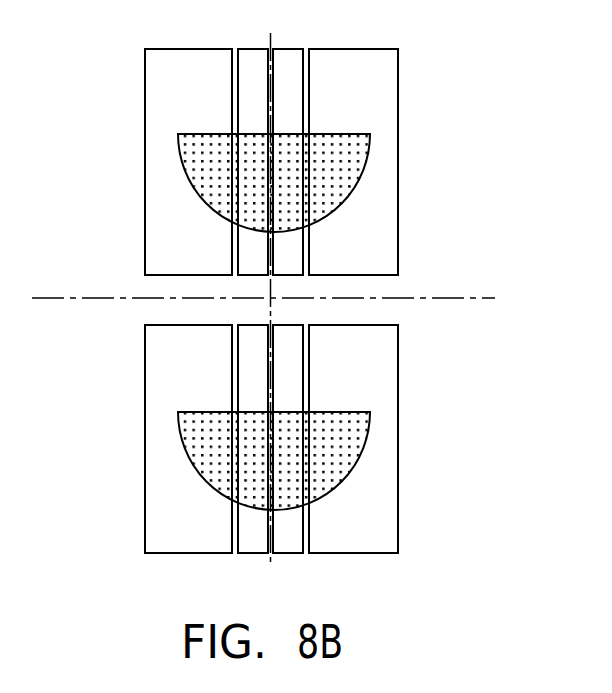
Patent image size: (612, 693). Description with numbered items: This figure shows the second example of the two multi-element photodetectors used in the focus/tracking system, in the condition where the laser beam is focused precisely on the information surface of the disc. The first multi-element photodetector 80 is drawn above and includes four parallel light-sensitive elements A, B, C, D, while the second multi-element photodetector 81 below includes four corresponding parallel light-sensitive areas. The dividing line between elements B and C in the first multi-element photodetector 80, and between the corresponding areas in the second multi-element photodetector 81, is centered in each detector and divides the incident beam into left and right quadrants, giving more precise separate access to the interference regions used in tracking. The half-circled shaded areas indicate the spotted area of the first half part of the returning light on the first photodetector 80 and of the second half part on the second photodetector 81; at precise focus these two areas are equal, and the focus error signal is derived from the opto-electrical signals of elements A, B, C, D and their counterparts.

The first multi-element photodetector 80 is at (70, 152).
The second multi-element photodetector 81 is at (70, 438).
The light-sensitive element A is at (188, 304).
The light-sensitive element B is at (253, 304).
The light-sensitive element C is at (288, 304).
The light-sensitive element D is at (353, 304).